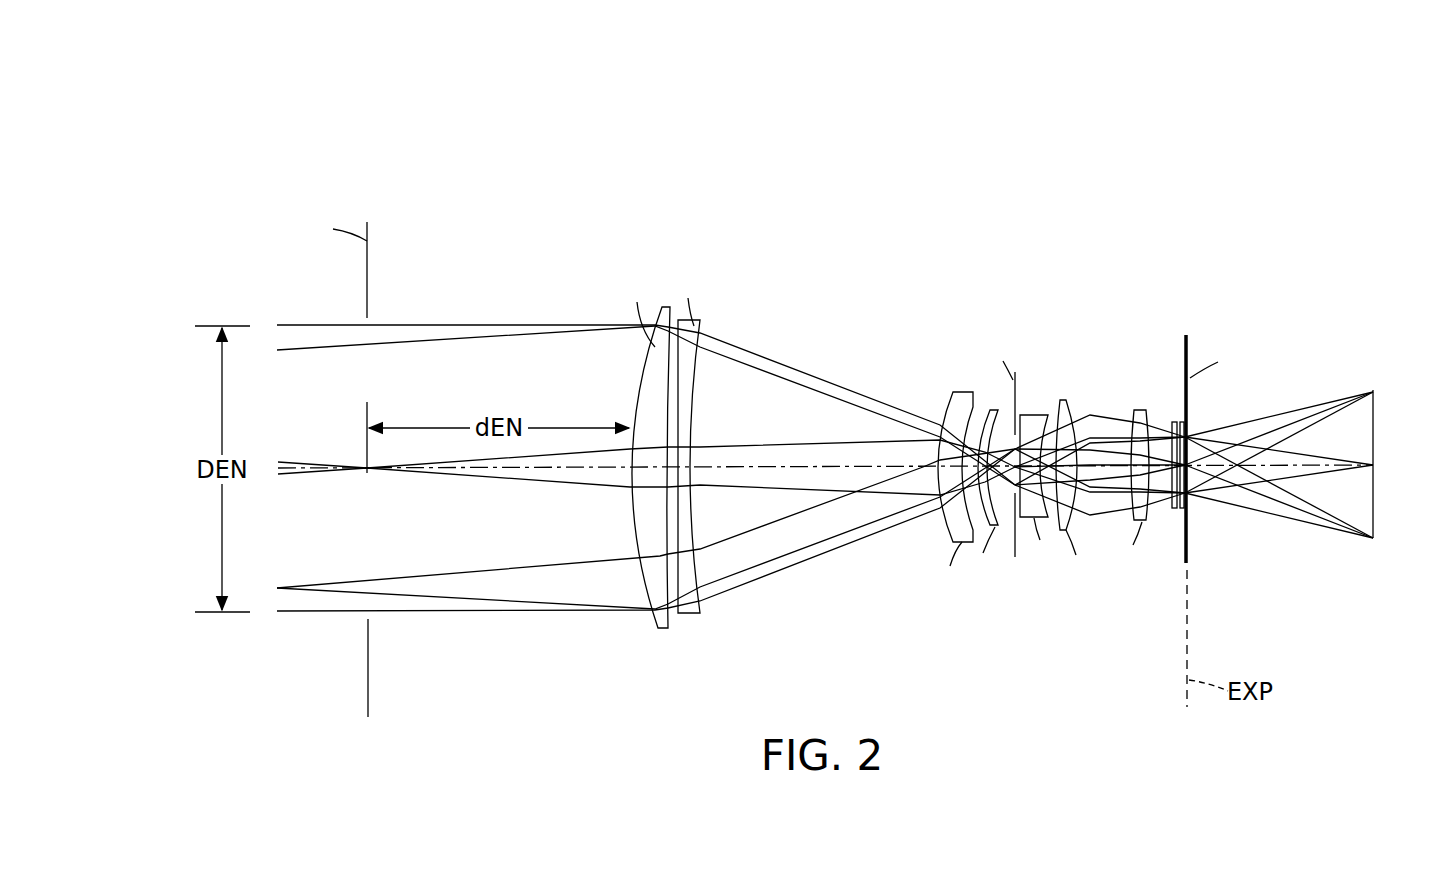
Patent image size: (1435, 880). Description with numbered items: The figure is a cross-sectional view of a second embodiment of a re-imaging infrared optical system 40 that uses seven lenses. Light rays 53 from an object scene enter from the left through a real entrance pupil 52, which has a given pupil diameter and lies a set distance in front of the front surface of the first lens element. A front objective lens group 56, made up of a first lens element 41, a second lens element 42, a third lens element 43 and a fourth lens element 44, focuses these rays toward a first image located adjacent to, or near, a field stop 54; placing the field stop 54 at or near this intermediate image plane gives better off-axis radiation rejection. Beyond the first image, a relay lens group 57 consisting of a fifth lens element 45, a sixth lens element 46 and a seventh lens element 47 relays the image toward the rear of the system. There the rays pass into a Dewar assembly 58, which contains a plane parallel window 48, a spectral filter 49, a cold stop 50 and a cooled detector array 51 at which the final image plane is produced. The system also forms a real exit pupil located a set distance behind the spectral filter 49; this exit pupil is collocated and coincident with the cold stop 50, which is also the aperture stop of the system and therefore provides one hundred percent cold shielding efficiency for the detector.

The re-imaging infrared optical system 40 is at (931, 236).
The lens element L1 41 is at (657, 597).
The lens element L2 42 is at (695, 612).
The lens element L3 43 is at (958, 395).
The lens element L4 44 is at (992, 410).
The lens element L5 45 is at (1035, 412).
The lens element L6 46 is at (1065, 400).
The lens element L7 47 is at (1143, 412).
The plane parallel window 48 is at (1173, 512).
The spectral filter 49 is at (1182, 510).
The cold stop 50 is at (1190, 558).
The cooled detector array 51 is at (1376, 518).
The real entrance pupil 52 is at (369, 695).
The light rays 53 is at (523, 478).
The field stop 54 is at (1013, 548).
The front objective lens group 56 is at (770, 269).
The relay lens group 57 is at (1053, 237).
The Dewar assembly 58 is at (1295, 370).